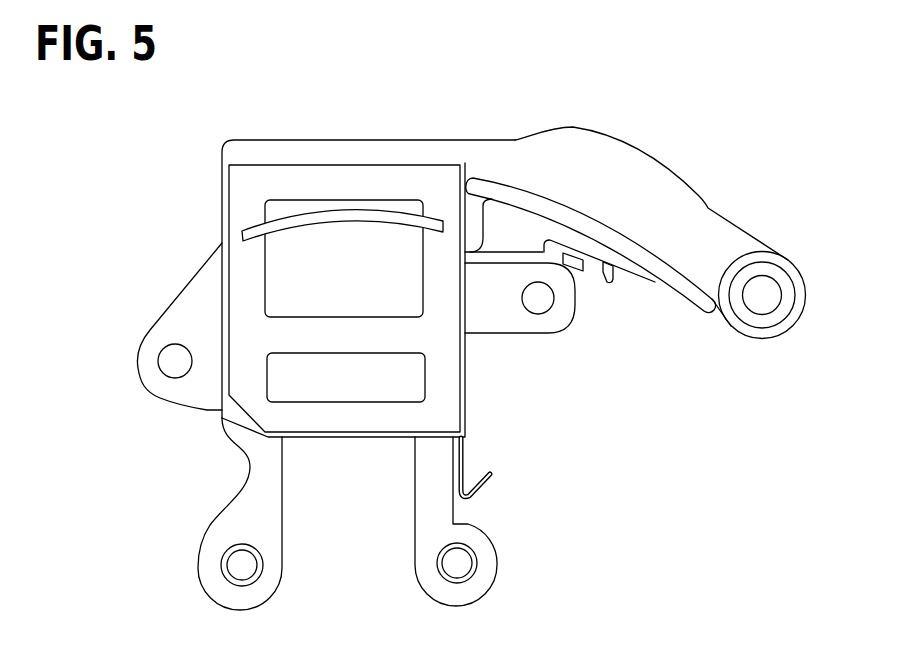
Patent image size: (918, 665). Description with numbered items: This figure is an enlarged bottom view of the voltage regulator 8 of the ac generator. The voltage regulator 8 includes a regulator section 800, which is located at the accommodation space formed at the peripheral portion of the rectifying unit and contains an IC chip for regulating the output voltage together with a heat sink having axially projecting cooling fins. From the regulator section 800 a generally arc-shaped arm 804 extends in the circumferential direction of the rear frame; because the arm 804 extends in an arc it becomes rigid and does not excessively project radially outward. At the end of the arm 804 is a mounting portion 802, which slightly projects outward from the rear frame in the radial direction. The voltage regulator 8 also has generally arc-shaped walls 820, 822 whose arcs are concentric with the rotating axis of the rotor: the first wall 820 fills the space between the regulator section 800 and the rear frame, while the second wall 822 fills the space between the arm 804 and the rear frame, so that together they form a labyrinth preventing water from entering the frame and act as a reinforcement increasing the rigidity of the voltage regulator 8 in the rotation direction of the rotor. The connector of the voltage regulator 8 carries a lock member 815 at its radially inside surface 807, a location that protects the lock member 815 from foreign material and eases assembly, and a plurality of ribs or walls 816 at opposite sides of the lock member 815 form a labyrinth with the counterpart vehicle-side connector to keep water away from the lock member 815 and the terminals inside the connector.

The voltage regulator 8 is at (460, 98).
The regulator section 800 is at (287, 182).
The first wall 820 is at (372, 223).
The second wall 822 is at (540, 208).
The arm 804 is at (647, 183).
The mounting portion 802 is at (753, 318).
The lock member 815 is at (580, 273).
The ribs or walls 816 is at (607, 282).
The radially inside surface 807 is at (592, 260).